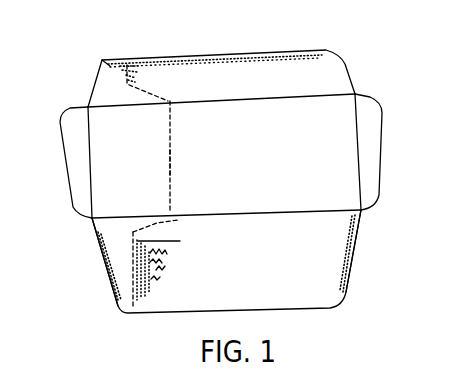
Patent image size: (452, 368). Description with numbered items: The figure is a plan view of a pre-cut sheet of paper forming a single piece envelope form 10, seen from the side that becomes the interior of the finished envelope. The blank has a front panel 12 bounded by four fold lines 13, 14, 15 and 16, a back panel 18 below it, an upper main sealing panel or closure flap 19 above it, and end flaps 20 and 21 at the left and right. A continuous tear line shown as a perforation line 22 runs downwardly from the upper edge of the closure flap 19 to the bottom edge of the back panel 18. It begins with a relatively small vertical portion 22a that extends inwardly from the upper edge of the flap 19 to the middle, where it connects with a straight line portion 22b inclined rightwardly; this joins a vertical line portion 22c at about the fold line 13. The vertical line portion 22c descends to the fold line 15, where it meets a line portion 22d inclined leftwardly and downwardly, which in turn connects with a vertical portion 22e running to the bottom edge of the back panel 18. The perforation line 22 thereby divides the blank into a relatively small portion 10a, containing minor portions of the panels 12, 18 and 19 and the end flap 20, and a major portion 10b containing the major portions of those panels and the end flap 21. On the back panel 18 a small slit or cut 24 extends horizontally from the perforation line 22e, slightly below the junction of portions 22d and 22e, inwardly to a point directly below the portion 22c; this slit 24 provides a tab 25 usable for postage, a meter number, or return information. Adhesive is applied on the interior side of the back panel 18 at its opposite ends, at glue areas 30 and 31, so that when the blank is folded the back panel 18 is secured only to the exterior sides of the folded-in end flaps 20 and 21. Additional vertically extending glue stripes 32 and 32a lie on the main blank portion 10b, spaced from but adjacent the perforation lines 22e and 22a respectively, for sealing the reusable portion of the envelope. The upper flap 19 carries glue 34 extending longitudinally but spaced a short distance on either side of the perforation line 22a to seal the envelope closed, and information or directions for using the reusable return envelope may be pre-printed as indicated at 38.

The envelope form 10 is at (378, 49).
The small portion of blank 10a is at (96, 237).
The major portion of blank 10b is at (350, 268).
The front panel 12 is at (282, 160).
The fold line 13 is at (302, 98).
The fold line 14 is at (359, 178).
The fold line 15 is at (220, 212).
The fold line 16 is at (92, 153).
The back panel 18 is at (290, 272).
The closure flap 19 is at (282, 88).
The end flap 20 is at (68, 134).
The end flap 21 is at (373, 125).
The perforation line 22 is at (171, 162).
The vertical portion of perforation line 22a is at (118, 61).
The inclined straight line portion 22b is at (150, 94).
The vertical line portion 22c is at (171, 131).
The inclined line portion 22d is at (155, 228).
The vertical portion of perforation line 22e is at (147, 276).
The slit 24 is at (156, 242).
The tab 25 is at (148, 233).
The glue area 30 is at (103, 266).
The glue area 31 is at (350, 280).
The glue stripe 32 is at (141, 289).
The glue stripe 32a is at (138, 78).
The glue 34 is at (263, 55).
The pre-printed information 38 is at (163, 258).